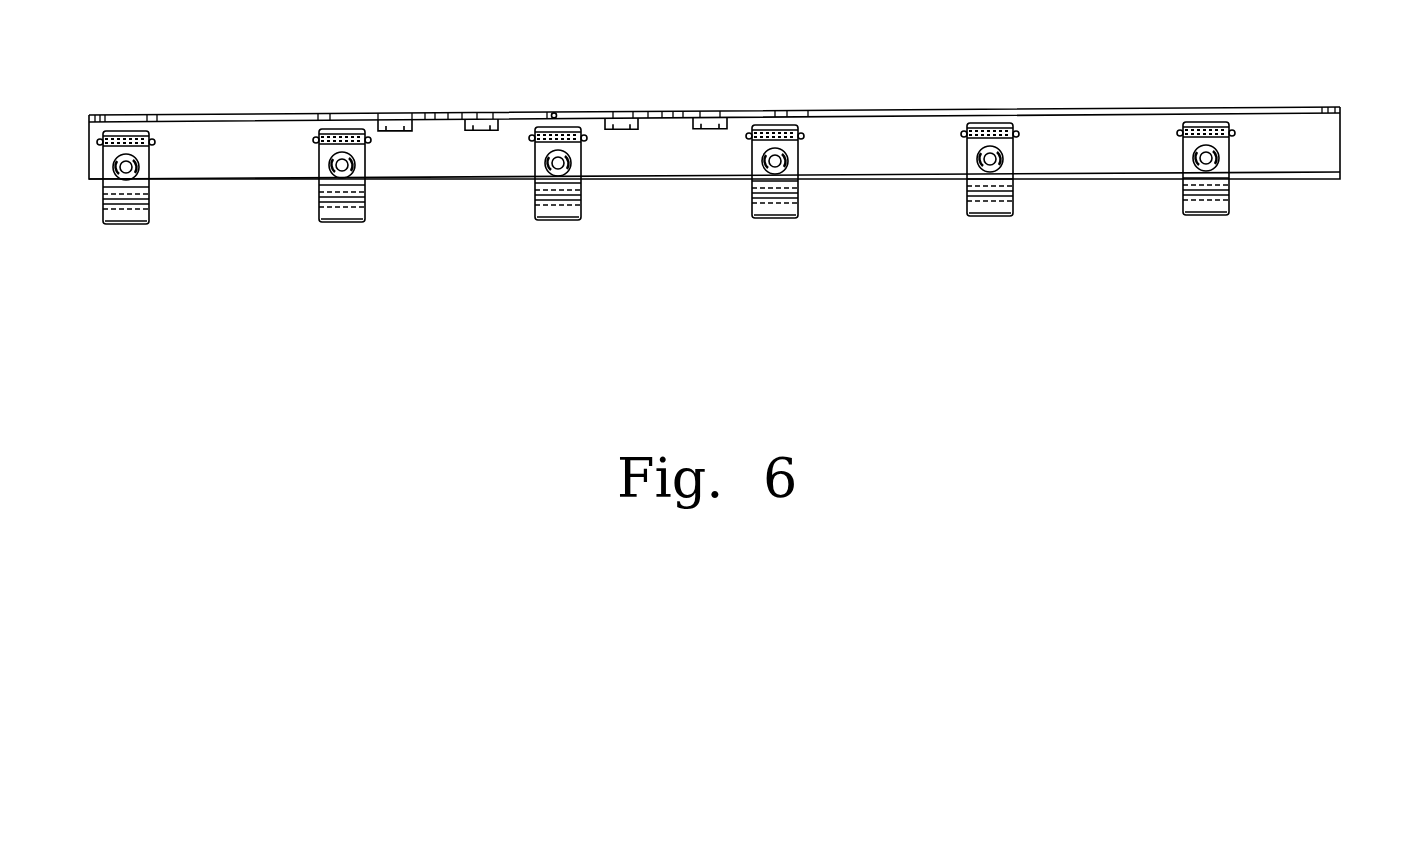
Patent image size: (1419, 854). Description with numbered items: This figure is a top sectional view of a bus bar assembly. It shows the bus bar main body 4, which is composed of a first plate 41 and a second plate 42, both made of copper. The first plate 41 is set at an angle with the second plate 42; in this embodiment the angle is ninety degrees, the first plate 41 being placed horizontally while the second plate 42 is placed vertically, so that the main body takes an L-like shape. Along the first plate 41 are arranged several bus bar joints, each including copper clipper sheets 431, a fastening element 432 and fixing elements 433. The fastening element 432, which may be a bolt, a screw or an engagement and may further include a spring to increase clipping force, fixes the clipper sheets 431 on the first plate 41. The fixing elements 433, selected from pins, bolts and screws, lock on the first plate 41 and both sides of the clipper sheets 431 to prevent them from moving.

The bus bar main body 4 is at (746, 181).
The first plate 41 is at (873, 158).
The second plate 42 is at (1067, 110).
The clipper sheet 431 is at (985, 242).
The fastening element 432 is at (1084, 233).
The fixing element 433 is at (816, 70).